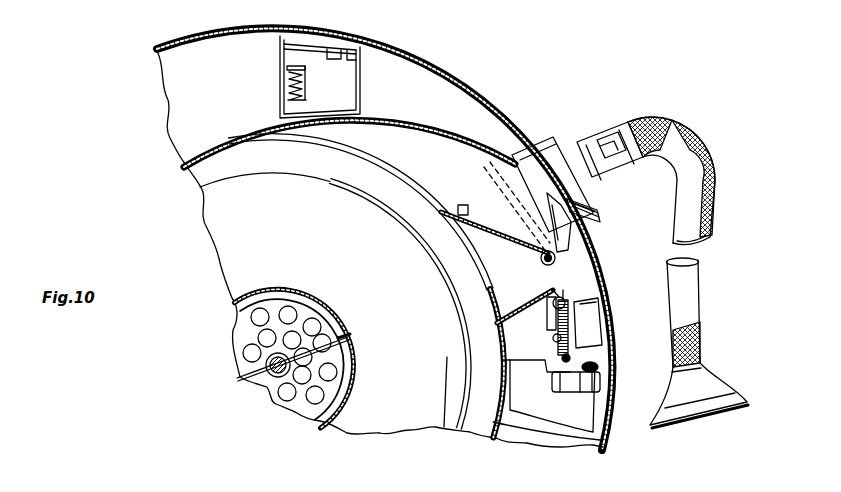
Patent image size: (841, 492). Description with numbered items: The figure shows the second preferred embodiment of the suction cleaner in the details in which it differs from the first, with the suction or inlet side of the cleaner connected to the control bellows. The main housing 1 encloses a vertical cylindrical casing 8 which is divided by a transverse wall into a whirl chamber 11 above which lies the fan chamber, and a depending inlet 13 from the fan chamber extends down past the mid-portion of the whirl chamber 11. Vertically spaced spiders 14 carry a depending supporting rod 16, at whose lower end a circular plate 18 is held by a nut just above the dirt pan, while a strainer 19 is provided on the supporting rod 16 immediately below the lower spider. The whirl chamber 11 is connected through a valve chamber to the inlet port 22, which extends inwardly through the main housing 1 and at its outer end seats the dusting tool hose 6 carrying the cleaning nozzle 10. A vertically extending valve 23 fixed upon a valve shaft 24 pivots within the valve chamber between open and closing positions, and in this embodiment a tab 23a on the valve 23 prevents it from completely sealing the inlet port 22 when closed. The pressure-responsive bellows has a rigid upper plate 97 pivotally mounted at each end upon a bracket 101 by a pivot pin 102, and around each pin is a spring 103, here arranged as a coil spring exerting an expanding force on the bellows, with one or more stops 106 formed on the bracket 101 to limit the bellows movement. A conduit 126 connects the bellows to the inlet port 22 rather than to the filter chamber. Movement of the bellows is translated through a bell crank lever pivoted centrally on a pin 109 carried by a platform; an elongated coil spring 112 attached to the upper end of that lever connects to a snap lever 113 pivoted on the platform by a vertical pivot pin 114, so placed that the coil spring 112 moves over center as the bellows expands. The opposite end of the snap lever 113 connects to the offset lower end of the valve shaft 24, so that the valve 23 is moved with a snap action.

The main housing 1 is at (171, 44).
The dusting tool hose 6 is at (680, 215).
The cylindrical casing 8 is at (207, 152).
The cleaning nozzle 10 is at (697, 433).
The whirl chamber 11 is at (366, 286).
The depending inlet 13 is at (356, 374).
The spiders 14 is at (350, 339).
The supporting rod 16 is at (271, 380).
The circular plate 18 is at (466, 377).
The strainer 19 is at (311, 297).
The inlet port 22 is at (590, 140).
The valve 23 is at (514, 202).
The tab 23a is at (461, 205).
The valve shaft 24 is at (546, 268).
The upper bellows plate 97 is at (394, 86).
The bracket 101 is at (311, 44).
The pivot pin 102 is at (287, 68).
The springs 103 is at (289, 86).
The stops 106 is at (352, 49).
The pin 109 is at (552, 380).
The coil spring 112 is at (570, 347).
The snap lever 113 is at (548, 320).
The pivot pin 114 is at (553, 340).
The conduit 126 is at (602, 326).